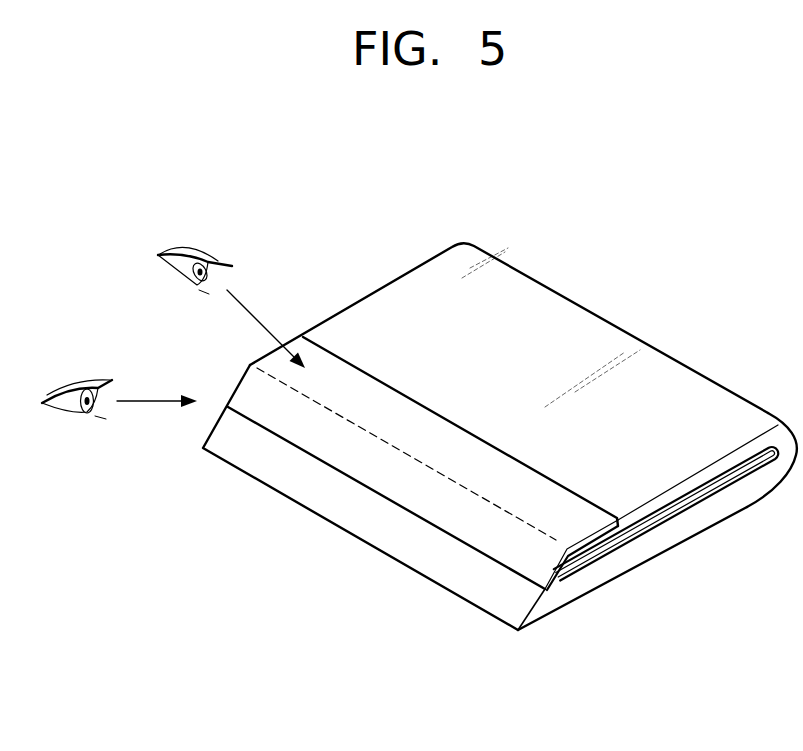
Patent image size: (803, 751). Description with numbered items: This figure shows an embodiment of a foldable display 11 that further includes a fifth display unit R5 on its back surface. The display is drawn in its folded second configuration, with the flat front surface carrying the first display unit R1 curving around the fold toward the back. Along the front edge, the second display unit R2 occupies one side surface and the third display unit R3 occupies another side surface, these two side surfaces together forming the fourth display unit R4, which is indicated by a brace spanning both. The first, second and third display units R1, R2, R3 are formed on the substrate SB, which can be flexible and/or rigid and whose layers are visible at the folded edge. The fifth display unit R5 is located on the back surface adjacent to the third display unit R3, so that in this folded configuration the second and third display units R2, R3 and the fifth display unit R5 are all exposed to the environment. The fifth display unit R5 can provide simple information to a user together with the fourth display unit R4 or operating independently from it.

The foldable display 11 is at (500, 469).
The first display unit R1 is at (737, 475).
The second display unit R2 is at (440, 572).
The third display unit R3 is at (492, 537).
The fourth display unit R4 is at (379, 546).
The fifth display unit R5 is at (580, 520).
The substrate SB is at (663, 538).